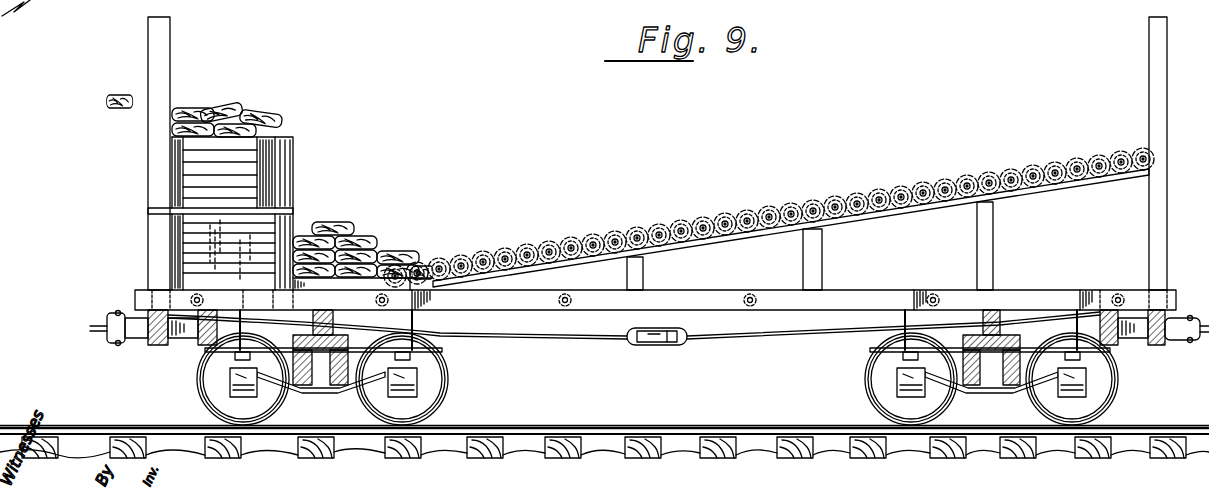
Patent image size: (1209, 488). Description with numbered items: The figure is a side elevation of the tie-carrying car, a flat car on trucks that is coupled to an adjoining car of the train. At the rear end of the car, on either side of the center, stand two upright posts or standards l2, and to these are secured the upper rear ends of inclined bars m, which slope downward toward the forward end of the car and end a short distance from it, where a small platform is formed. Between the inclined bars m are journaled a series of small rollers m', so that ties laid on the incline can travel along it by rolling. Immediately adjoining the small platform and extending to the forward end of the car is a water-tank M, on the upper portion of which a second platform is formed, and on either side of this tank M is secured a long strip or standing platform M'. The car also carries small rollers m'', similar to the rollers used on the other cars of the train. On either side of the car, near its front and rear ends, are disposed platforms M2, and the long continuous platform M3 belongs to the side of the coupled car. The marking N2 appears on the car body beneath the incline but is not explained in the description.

The water-tank M is at (231, 252).
The standing platform M' is at (233, 213).
The platforms M2 is at (420, 355).
The long continuous platform M3 is at (887, 353).
The inclined bars m is at (779, 229).
The small rollers m' is at (769, 217).
The small rollers m'' is at (810, 253).
The car frame N2 is at (655, 280).
The upright posts or standards l2 is at (1157, 207).